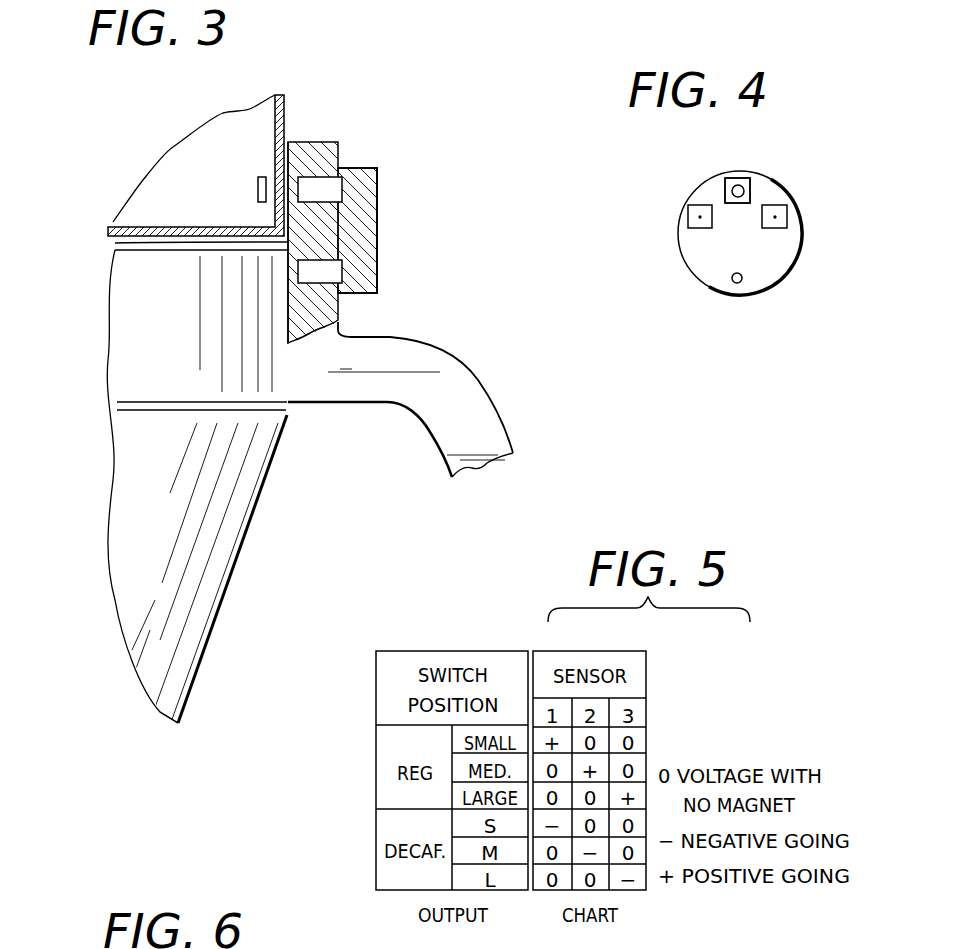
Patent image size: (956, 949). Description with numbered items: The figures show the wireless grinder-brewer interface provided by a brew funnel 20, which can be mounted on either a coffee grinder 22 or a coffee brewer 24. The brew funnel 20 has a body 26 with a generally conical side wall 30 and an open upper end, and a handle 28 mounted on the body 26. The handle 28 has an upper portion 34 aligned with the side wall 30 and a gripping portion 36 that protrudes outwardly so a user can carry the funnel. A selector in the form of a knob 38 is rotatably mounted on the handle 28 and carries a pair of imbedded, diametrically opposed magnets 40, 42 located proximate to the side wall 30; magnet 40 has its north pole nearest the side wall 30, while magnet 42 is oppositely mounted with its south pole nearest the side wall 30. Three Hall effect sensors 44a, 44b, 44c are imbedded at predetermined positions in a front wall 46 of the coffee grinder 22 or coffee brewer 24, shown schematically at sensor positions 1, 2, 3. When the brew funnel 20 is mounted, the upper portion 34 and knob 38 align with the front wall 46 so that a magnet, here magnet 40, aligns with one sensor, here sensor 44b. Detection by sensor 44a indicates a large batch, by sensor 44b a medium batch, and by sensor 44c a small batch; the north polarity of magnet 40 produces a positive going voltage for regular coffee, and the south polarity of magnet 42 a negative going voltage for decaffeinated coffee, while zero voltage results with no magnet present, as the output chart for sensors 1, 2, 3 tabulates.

In FIG. 3, the brew funnel 20 is at (272, 477).
In FIG. 3, the coffee grinder 22 is at (194, 158).
In FIG. 3, the coffee brewer 24 is at (191, 177).
In FIG. 3, the body 26 is at (202, 645).
In FIG. 3, the handle 28 is at (427, 448).
In FIG. 3, the side wall 30 is at (243, 552).
In FIG. 3, the upper portion 34 is at (338, 152).
In FIG. 3, the gripping portion 36 is at (473, 403).
In FIG. 3, the selector knob 38 is at (377, 232).
In FIG. 4, the selector knob 38 is at (775, 290).
In FIG. 3, the magnet 40 is at (345, 190).
In FIG. 4, the magnet 40 is at (752, 191).
In FIG. 3, the magnet 42 is at (345, 270).
In FIG. 4, the magnet 42 is at (737, 283).
In FIG. 4, the Hall effect sensor 44a is at (697, 207).
In FIG. 3, the Hall effect sensor 44b is at (258, 186).
In FIG. 4, the Hall effect sensor 44b is at (723, 188).
In FIG. 4, the Hall effect sensor 44c is at (780, 207).
In FIG. 3, the front wall 46 is at (287, 120).
In FIG. 4, the sensor position 1 is at (667, 218).
In FIG. 4, the sensor position 2 is at (742, 163).
In FIG. 4, the sensor position 3 is at (813, 218).